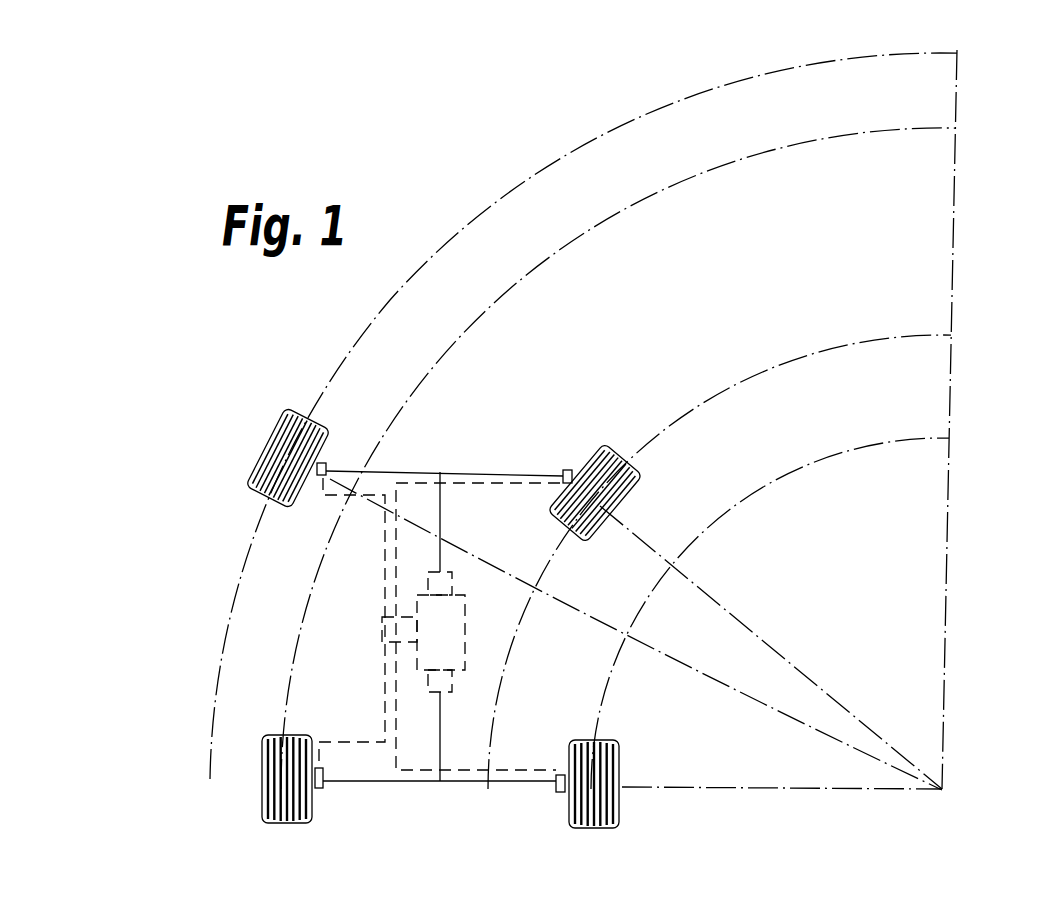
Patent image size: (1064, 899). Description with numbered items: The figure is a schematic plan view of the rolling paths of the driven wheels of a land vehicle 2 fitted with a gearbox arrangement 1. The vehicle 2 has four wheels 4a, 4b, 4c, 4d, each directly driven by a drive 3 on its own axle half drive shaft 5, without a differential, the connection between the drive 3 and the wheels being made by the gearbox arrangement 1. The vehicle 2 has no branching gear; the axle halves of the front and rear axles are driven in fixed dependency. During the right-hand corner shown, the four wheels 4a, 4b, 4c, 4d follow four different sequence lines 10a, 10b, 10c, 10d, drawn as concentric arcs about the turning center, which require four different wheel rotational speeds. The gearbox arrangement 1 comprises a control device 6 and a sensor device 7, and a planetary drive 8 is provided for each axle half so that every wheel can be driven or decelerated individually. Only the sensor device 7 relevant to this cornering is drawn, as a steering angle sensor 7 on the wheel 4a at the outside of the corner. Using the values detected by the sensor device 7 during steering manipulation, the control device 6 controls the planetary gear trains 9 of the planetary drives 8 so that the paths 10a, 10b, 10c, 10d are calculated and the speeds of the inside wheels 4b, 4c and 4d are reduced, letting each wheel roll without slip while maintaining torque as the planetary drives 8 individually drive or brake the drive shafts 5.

The gearbox arrangement 1 is at (190, 610).
The land vehicle 2 is at (563, 381).
The drive 3 is at (512, 672).
The wheel 4a is at (276, 451).
The wheel 4b is at (270, 795).
The wheel 4c is at (598, 528).
The wheel 4d is at (622, 758).
The axle half drive shaft 5 is at (396, 454).
The control device 6 is at (383, 628).
The sensor device 7 is at (323, 466).
The planetary drive 8 is at (328, 470).
The planetary gear train 9 is at (295, 522).
The sequence line 10a is at (615, 405).
The sequence line 10b is at (652, 450).
The sequence line 10c is at (750, 555).
The sequence line 10d is at (802, 606).